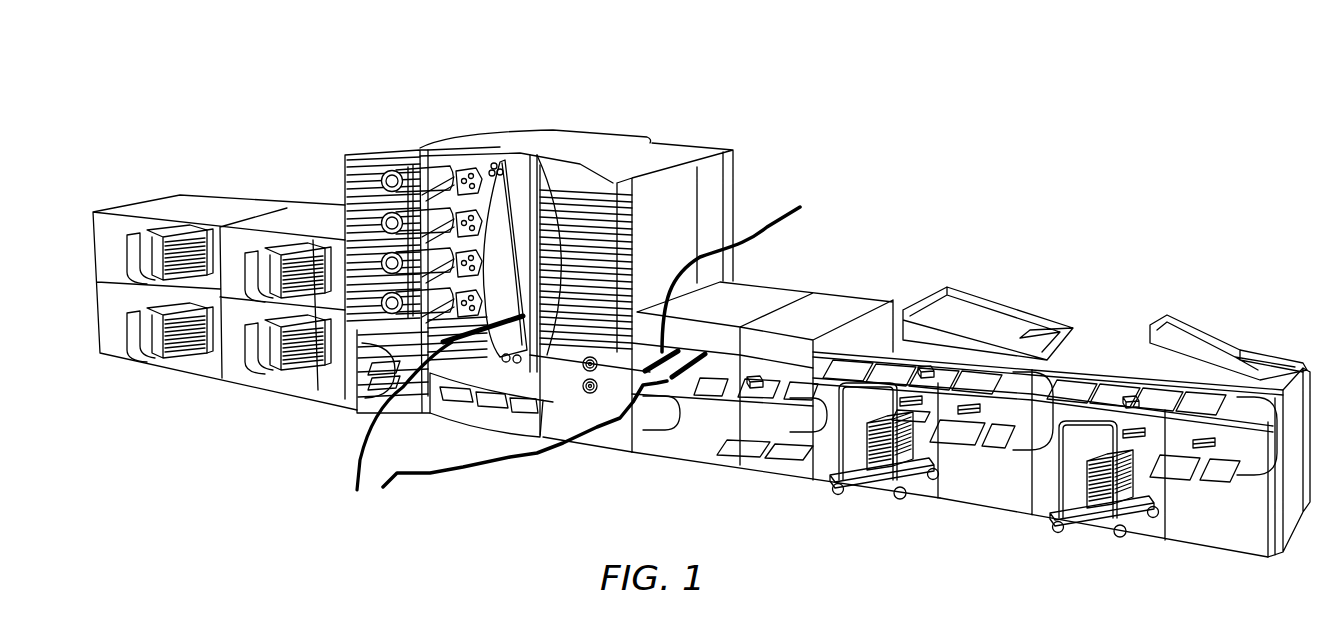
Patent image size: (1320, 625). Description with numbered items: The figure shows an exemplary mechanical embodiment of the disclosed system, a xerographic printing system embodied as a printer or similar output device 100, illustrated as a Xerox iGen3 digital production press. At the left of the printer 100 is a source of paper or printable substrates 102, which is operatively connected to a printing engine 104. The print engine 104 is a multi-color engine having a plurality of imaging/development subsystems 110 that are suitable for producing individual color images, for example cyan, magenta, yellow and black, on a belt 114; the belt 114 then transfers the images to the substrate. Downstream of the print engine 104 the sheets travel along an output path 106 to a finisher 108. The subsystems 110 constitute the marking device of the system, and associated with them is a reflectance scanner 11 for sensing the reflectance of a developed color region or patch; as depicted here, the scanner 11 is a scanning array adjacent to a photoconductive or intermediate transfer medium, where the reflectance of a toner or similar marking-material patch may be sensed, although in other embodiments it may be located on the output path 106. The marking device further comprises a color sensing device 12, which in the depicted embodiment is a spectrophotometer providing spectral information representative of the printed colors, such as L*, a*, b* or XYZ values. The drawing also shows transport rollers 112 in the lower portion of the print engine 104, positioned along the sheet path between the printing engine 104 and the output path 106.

The printer 100 is at (318, 90).
The source of paper or printable substrates 102 is at (178, 228).
The printing engine 104 is at (624, 131).
The output path 106 is at (775, 377).
The finisher 108 is at (1017, 375).
The imaging/development subsystems 110 is at (405, 163).
The transport rollers 112 is at (597, 400).
The belt 114 is at (517, 177).
The reflectance scanner 11 is at (507, 423).
The color sensing device 12 is at (737, 271).